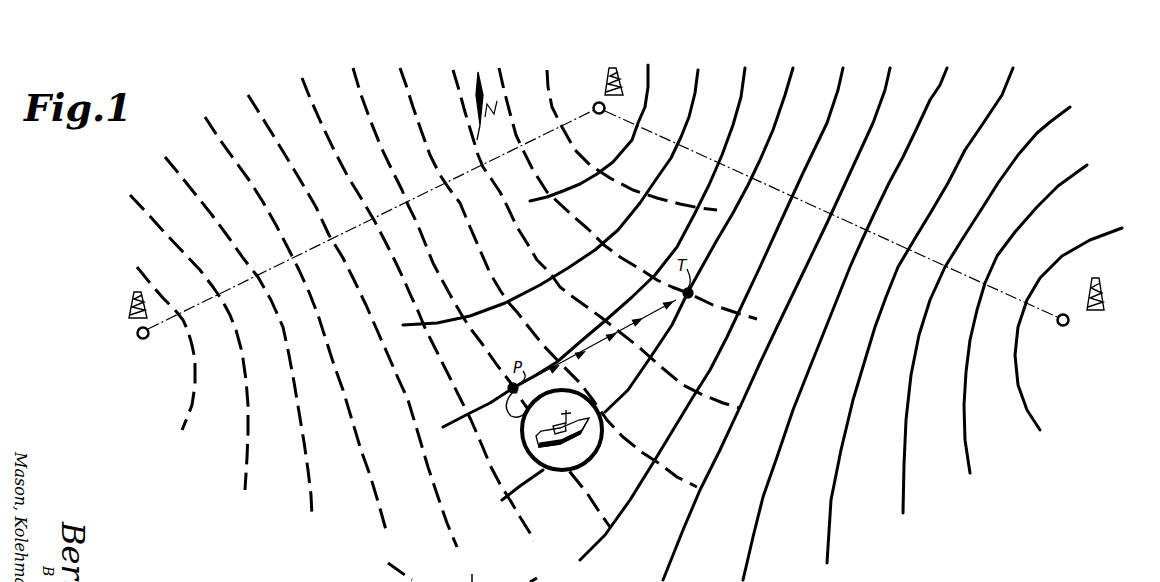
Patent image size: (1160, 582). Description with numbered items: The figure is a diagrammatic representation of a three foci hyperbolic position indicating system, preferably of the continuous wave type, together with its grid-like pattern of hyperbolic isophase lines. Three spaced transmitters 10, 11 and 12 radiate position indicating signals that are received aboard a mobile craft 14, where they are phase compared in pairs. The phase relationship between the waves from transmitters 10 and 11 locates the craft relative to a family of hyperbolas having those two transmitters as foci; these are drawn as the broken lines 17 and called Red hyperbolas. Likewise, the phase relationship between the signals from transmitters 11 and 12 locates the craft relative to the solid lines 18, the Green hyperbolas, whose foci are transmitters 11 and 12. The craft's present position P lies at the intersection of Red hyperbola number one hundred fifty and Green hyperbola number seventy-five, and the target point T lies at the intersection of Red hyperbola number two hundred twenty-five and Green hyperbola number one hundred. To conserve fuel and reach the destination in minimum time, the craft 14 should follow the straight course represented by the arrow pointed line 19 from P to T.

The transmitter 10 is at (129, 294).
The transmitter 11 is at (606, 72).
The transmitter 12 is at (1101, 277).
The mobile craft 14 is at (578, 433).
The Red hyperbolas 17 is at (246, 388).
The Green hyperbolas 18 is at (793, 412).
The arrow pointed line 19 is at (621, 330).